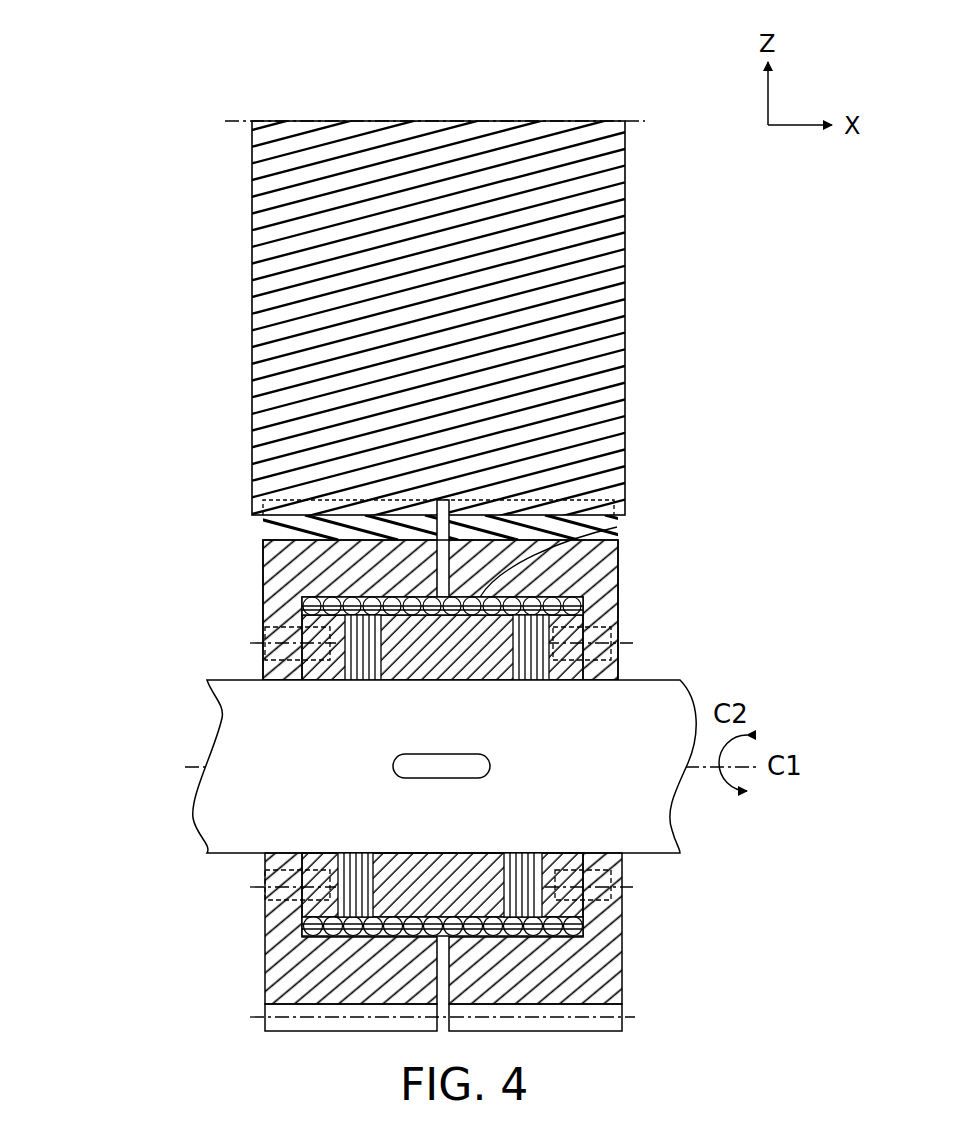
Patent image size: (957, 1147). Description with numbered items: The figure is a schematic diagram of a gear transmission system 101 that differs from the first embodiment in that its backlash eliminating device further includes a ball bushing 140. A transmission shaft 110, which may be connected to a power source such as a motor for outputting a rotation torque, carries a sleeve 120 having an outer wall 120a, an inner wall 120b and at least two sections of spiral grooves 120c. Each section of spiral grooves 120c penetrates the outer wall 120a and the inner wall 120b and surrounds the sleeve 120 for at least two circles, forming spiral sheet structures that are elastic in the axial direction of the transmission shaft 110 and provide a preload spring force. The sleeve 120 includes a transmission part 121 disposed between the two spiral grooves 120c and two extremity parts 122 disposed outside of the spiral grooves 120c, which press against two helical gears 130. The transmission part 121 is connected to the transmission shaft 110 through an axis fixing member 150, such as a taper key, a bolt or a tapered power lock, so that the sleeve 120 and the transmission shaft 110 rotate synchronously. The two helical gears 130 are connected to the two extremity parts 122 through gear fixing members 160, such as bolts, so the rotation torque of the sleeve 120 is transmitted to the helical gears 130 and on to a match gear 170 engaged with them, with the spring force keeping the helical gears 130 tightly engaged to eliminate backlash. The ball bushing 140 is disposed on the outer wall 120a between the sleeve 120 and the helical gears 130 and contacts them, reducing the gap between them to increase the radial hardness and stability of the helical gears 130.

The gear transmission system 101 is at (110, 44).
The transmission shaft 110 is at (650, 690).
The sleeve 120 is at (524, 575).
The outer wall 120a is at (322, 613).
The inner wall 120b is at (423, 683).
The spiral grooves 120c is at (343, 918).
The transmission part 121 is at (263, 558).
The extremity parts 122 is at (452, 497).
The helical gears 130 is at (266, 600).
The ball bushing 140 is at (608, 605).
The axis fixing member 150 is at (445, 778).
The gear fixing members 160 is at (266, 899).
The match gear 170 is at (605, 430).